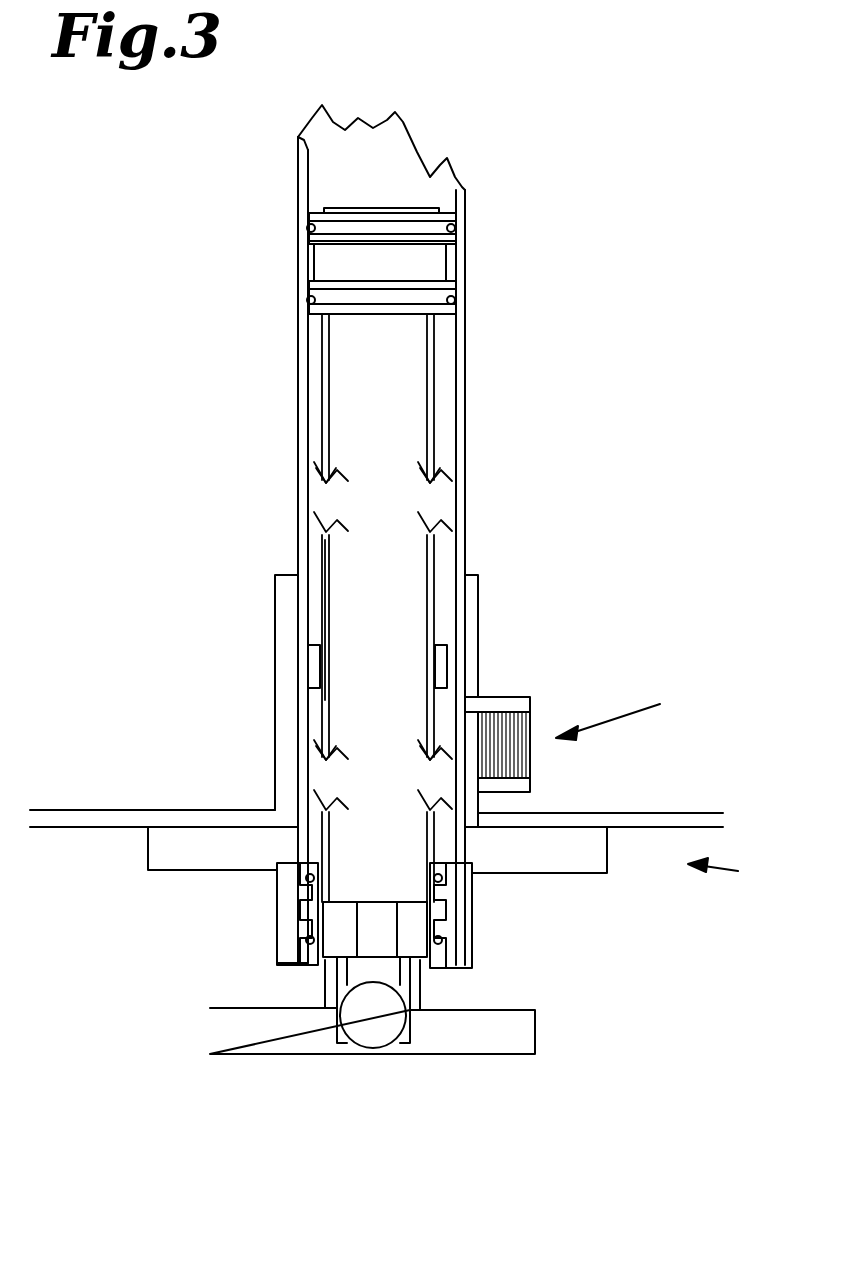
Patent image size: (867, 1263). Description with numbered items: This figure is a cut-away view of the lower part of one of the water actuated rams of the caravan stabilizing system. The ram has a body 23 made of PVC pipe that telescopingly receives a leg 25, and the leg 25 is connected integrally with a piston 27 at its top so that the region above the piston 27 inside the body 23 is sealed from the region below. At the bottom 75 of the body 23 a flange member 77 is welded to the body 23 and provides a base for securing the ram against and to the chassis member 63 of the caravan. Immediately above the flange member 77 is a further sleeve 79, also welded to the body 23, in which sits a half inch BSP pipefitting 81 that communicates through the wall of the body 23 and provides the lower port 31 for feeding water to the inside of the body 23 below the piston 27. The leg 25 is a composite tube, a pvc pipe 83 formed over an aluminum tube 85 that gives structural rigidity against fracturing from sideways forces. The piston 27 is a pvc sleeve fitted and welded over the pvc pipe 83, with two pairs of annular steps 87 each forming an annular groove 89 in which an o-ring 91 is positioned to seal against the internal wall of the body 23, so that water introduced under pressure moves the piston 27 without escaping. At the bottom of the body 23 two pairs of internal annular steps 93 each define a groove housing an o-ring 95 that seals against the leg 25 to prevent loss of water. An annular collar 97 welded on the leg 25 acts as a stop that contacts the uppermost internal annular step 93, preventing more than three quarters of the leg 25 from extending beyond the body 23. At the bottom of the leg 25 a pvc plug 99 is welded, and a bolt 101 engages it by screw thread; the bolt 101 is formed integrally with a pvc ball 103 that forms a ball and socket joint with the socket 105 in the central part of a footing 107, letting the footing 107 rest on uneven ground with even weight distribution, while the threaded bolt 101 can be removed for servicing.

The body 23 is at (298, 366).
The leg 25 is at (392, 413).
The piston 27 is at (465, 268).
The lower port 31 is at (626, 715).
The chassis member 63 is at (50, 816).
The bottom 75 is at (733, 876).
The flange member 77 is at (186, 853).
The further sleeve 79 is at (281, 600).
The pipefitting 81 is at (508, 703).
The pvc pipe 83 is at (322, 548).
The aluminum tube 85 is at (329, 566).
The annular steps 87 is at (460, 215).
The annular groove 89 is at (327, 224).
The o-ring 91 is at (458, 228).
The internal annular steps 93 is at (448, 868).
The o-ring 95 is at (306, 880).
The annular collar 97 is at (312, 668).
The pvc plug 99 is at (340, 926).
The bolt 101 is at (373, 925).
The pvc ball 103 is at (372, 1032).
The socket 105 is at (408, 1043).
The footing 107 is at (474, 1045).